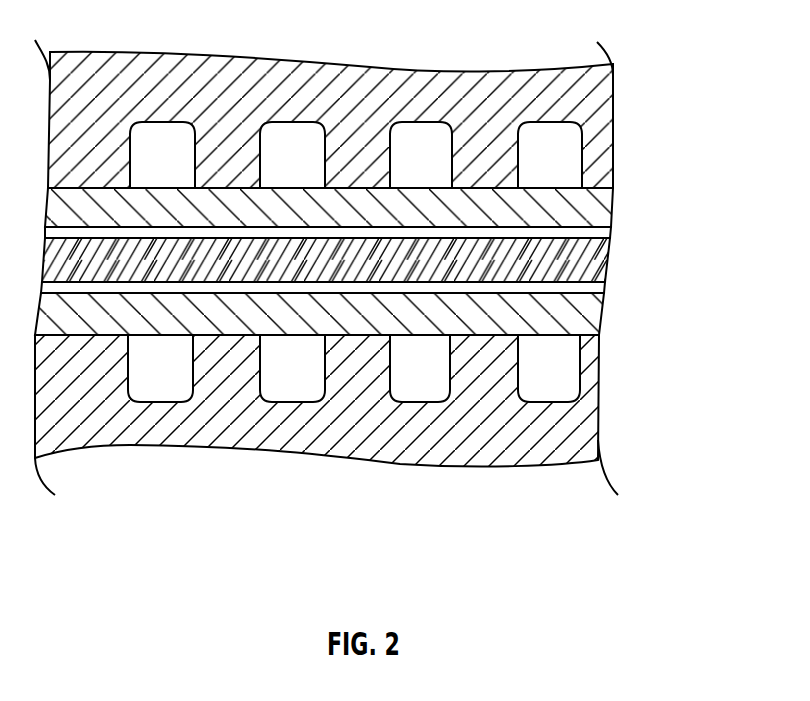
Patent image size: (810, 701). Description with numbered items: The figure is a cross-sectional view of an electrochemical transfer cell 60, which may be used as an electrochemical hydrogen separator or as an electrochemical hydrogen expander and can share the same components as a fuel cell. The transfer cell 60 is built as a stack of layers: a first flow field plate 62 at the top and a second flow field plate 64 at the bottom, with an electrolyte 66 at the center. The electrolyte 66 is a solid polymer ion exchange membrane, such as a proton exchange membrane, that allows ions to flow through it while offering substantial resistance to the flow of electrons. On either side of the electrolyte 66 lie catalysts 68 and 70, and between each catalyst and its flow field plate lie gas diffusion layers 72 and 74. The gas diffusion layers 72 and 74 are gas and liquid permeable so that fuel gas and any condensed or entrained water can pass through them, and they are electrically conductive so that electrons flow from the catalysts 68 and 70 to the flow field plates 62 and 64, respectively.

The electrochemical transfer cell 60 is at (382, 300).
The first flow field plate 62 is at (363, 92).
The second flow field plate 64 is at (385, 405).
The electrolyte 66 is at (595, 265).
The catalyst 68 is at (592, 232).
The catalyst 70 is at (593, 288).
The gas diffusion layer 72 is at (585, 208).
The gas diffusion layer 74 is at (592, 303).